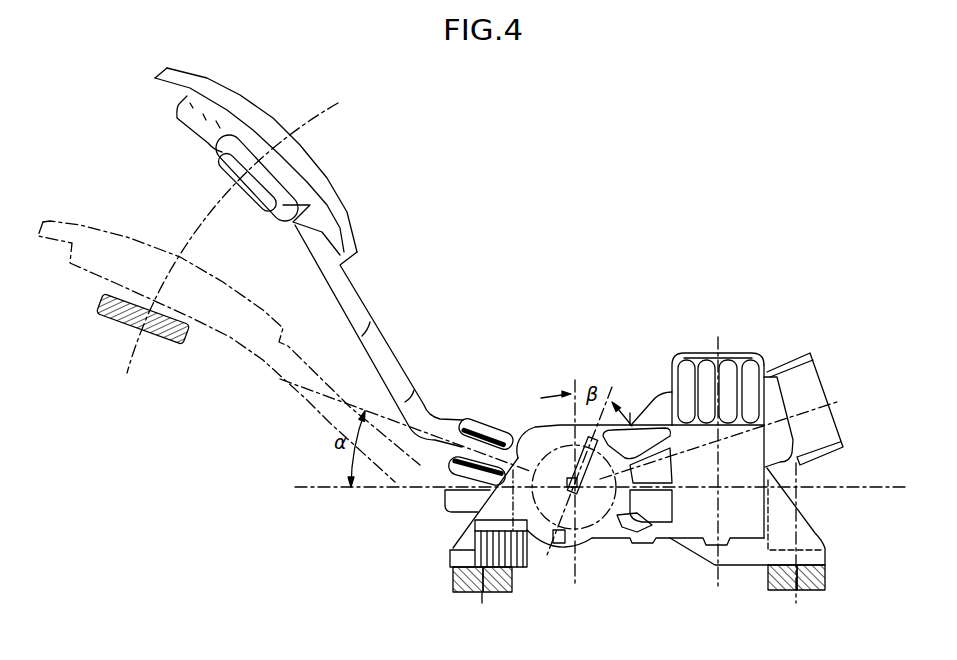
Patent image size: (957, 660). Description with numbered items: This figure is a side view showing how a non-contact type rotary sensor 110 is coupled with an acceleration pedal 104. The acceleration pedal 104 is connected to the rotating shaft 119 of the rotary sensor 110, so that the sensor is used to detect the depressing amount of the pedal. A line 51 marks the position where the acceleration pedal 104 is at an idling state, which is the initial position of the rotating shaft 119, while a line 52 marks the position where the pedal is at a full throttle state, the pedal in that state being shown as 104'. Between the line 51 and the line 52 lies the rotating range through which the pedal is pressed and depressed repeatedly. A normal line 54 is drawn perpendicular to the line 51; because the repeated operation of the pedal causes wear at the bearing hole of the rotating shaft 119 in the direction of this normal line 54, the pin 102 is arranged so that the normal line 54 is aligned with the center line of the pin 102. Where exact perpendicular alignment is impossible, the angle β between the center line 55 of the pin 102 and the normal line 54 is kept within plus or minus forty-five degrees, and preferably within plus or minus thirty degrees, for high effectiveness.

The acceleration pedal 104 is at (319, 257).
The acceleration pedal at full throttle state 104' is at (229, 351).
The line 51 is at (347, 403).
The line 52 is at (341, 489).
The normal line 54 is at (610, 393).
The center line of the pin 55 is at (573, 381).
The rotating shaft 119 is at (537, 430).
The pin 102 is at (557, 565).
The non-contact type rotary sensor 110 is at (623, 567).